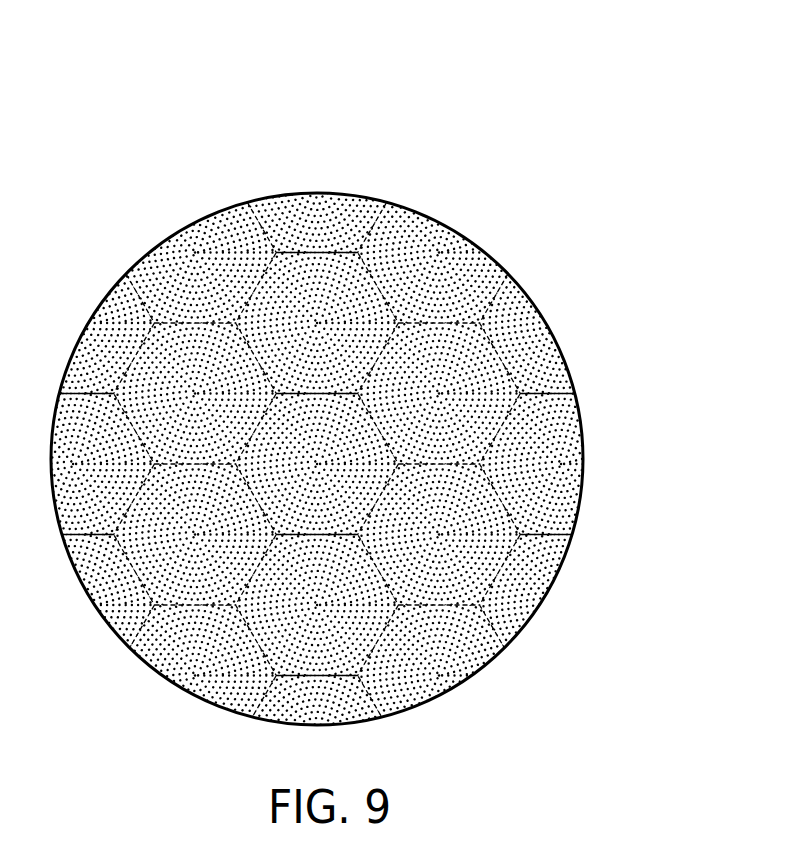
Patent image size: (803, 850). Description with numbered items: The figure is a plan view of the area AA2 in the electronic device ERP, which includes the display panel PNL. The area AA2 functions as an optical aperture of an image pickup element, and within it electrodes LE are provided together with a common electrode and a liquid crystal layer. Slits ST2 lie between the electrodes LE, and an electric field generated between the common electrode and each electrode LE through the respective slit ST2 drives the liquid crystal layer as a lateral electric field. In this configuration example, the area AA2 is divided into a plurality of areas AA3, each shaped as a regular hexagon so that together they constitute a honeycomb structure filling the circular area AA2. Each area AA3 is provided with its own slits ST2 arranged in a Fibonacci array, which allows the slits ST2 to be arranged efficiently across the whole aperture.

The display panel PNL is at (486, 60).
The electronic device ERP is at (570, 72).
The area AA2 is at (470, 195).
The area AA3 is at (532, 305).
The slit ST2 is at (320, 200).
The electrode LE is at (180, 225).